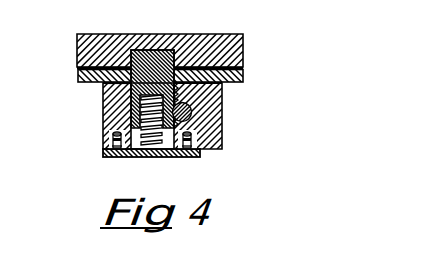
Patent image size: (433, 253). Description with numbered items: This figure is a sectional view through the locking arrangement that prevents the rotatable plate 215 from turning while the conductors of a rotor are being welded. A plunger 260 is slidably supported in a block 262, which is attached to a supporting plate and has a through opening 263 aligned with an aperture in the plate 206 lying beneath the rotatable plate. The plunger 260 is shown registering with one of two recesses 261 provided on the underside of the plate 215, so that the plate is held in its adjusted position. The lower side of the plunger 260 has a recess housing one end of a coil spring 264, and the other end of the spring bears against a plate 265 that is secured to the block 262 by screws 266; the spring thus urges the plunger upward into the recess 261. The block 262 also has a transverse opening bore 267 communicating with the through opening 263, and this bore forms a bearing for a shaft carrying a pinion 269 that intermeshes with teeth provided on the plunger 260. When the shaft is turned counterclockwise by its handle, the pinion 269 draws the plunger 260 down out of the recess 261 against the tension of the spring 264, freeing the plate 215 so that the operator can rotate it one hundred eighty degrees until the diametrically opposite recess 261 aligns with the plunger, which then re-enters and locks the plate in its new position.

The plate 215 is at (98, 37).
The recess 261 is at (160, 50).
The plate 206 is at (79, 77).
The plunger 260 is at (140, 87).
The block 262 is at (213, 104).
The through opening 263 is at (150, 118).
The coil spring 264 is at (130, 118).
The plate 265 is at (200, 157).
The screws 266 is at (117, 158).
The transverse opening bore 267 is at (191, 111).
The pinion 269 is at (183, 124).